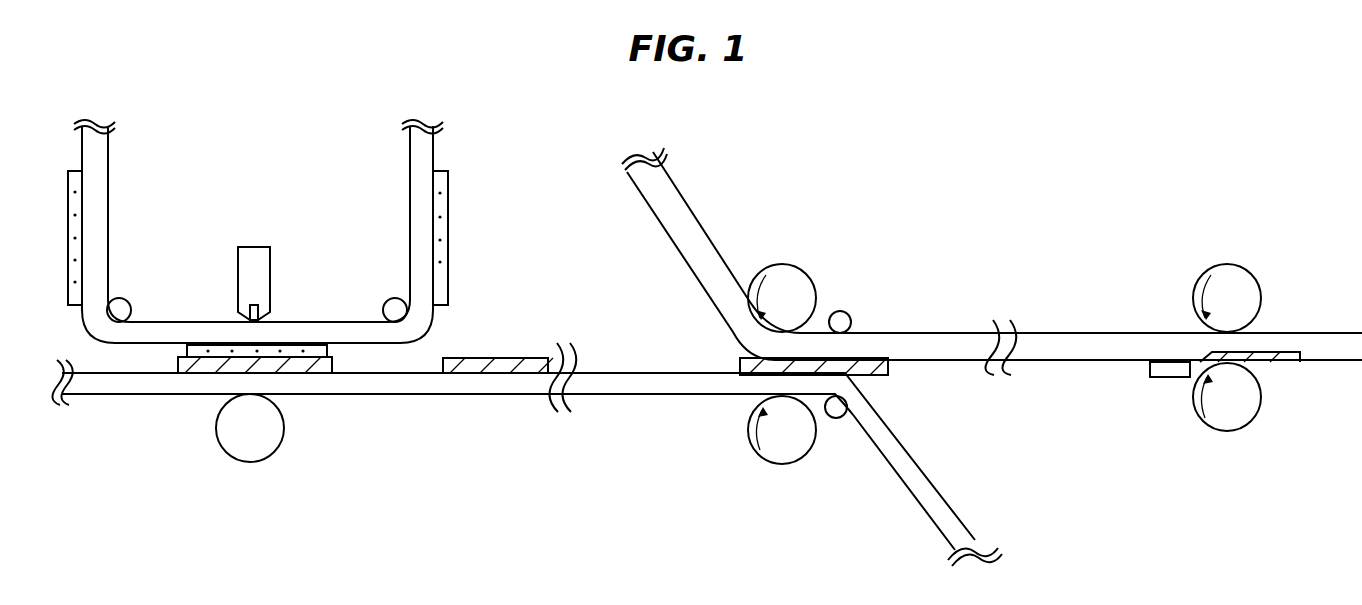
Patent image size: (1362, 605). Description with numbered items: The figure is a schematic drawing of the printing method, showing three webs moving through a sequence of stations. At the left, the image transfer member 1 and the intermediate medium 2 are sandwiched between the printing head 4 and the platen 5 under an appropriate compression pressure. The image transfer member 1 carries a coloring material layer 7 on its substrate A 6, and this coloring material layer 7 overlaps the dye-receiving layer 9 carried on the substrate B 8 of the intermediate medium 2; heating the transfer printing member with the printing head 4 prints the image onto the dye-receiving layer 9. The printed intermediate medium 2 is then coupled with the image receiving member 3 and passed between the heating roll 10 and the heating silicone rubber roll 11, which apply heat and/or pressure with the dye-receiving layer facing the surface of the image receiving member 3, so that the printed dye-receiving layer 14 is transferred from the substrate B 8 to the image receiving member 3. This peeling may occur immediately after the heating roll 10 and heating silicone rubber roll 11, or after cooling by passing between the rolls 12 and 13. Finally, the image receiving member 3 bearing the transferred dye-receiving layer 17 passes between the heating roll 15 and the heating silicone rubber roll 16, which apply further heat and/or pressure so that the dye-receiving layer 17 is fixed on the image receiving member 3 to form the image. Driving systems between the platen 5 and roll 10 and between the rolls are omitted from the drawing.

The image transfer member 1 is at (106, 115).
The intermediate medium 2 is at (53, 393).
The image receiving member 3 is at (668, 180).
The printing head 4 is at (246, 260).
The platen 5 is at (240, 463).
The substrate A 6 is at (98, 207).
The coloring material layer 7 is at (296, 356).
The substrate B 8 is at (108, 384).
The dye-receiving layer 9 is at (275, 363).
The heating roll 10 is at (785, 282).
The heating silicone rubber roll 11 is at (771, 463).
The roll 12 is at (842, 318).
The roll 13 is at (838, 417).
The dye-receiving layer 14 is at (876, 366).
The heating roll 15 is at (1232, 278).
The heating silicone rubber roll 16 is at (1228, 429).
The dye-receiving layer 17 is at (1166, 371).